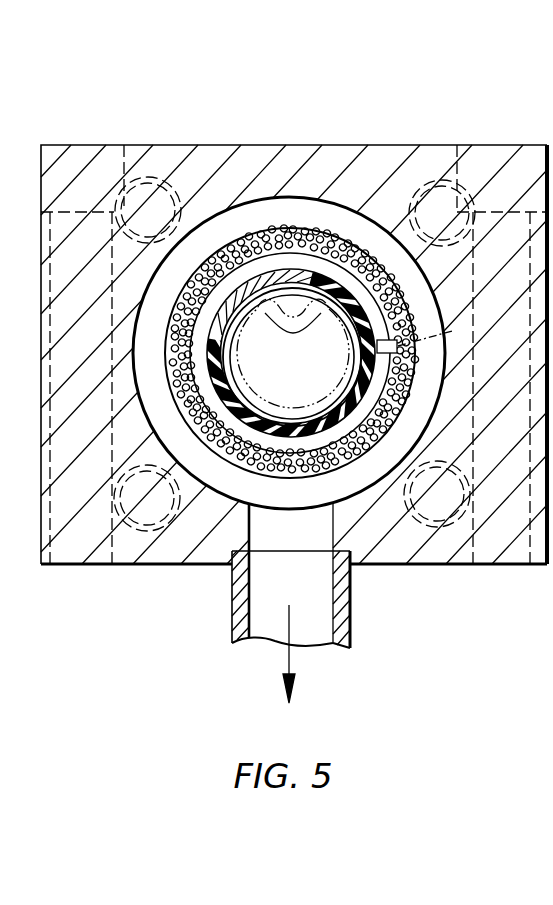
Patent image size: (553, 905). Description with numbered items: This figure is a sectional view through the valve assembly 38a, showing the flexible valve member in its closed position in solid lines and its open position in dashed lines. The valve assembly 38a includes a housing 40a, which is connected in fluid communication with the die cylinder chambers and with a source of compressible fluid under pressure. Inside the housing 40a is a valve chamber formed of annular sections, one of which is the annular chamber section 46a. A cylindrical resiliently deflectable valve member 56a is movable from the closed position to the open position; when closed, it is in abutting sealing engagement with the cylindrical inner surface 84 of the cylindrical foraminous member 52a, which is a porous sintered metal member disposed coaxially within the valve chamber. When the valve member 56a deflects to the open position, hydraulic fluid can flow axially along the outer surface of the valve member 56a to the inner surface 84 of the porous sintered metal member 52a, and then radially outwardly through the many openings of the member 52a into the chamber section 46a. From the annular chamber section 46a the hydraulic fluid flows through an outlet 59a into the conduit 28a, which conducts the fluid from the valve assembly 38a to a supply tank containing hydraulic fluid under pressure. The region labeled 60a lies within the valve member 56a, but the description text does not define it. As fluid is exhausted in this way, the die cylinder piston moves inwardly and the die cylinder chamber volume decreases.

The valve assembly 38a is at (435, 118).
The housing 40a is at (284, 158).
The annular chamber section 46a is at (292, 492).
The cylindrical foraminous member 52a is at (388, 424).
The resiliently deflectable valve member 56a is at (368, 354).
The cylindrical inner surface 84 is at (207, 399).
The valve member 60a is at (270, 369).
The outlet 59a is at (232, 552).
The conduit 28a is at (350, 607).